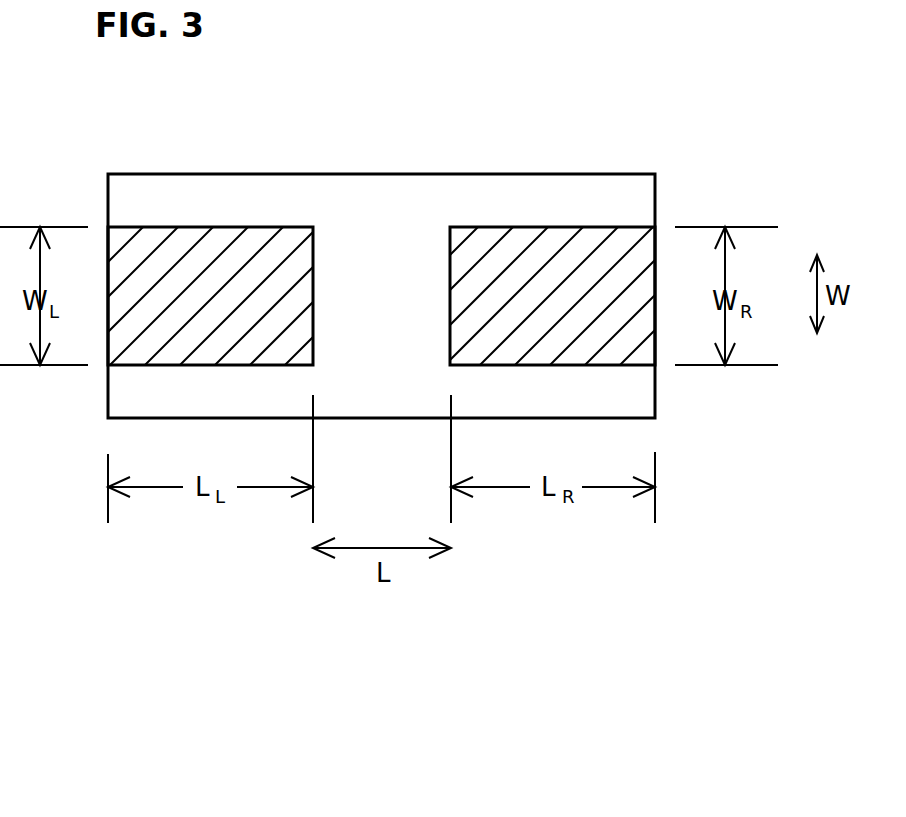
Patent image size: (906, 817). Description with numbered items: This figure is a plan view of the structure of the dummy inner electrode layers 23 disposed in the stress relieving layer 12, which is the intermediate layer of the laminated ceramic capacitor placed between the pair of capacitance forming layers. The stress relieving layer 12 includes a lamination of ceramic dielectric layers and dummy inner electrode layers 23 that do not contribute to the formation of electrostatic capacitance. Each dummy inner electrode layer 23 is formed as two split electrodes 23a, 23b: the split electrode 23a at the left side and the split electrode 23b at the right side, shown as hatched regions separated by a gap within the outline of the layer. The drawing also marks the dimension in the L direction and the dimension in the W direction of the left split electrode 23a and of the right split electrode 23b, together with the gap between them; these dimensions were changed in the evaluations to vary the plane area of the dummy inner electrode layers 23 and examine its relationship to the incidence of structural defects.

The stress relieving layer 12 is at (380, 172).
The dummy inner electrode layers 23 is at (396, 234).
The split electrode 23a is at (225, 227).
The split electrode 23b is at (566, 227).